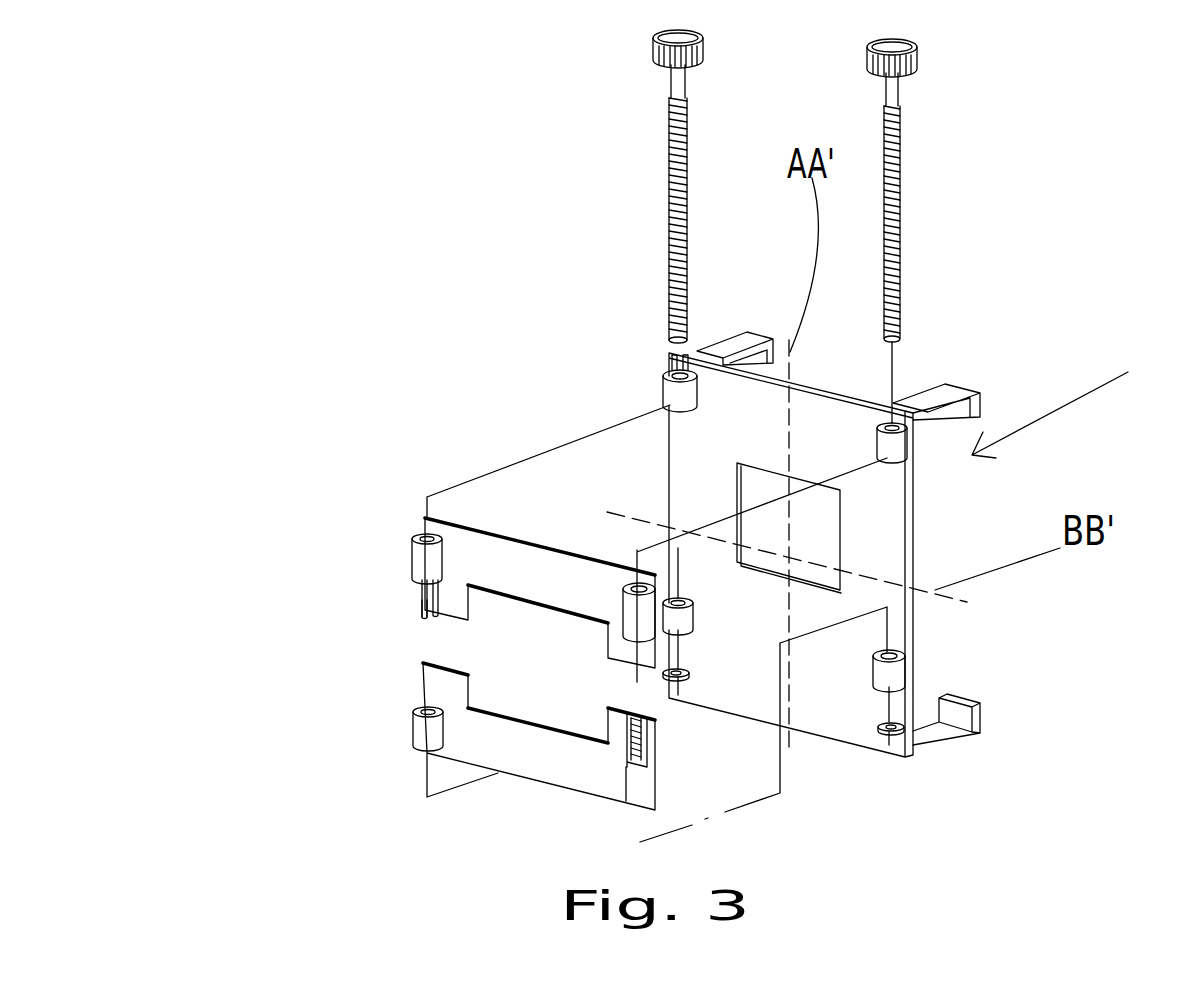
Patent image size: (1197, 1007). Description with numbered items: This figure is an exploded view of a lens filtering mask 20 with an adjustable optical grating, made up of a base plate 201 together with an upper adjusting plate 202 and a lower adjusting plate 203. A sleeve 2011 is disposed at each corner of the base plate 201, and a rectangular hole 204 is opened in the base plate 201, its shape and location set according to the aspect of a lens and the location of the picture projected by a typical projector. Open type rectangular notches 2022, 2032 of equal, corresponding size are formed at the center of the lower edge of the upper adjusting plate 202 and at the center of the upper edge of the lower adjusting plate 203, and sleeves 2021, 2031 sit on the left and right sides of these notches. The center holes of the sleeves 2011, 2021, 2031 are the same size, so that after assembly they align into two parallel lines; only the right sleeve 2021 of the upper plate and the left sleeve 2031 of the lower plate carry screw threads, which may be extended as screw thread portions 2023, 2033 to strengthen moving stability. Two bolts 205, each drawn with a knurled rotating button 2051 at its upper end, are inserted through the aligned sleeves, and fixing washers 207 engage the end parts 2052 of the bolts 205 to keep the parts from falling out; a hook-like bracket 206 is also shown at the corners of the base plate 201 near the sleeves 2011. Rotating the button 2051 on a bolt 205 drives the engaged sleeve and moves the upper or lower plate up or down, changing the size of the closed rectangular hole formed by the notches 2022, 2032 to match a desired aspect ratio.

The lens filtering mask 20 is at (1071, 402).
The base plate 201 is at (865, 508).
The sleeve 2011 is at (735, 345).
The upper adjusting plate 202 is at (498, 560).
The sleeve 2021 is at (430, 560).
The open type rectangular notch 2022 is at (533, 613).
The screw thread portion 2023 is at (418, 594).
The lower adjusting plate 203 is at (450, 682).
The sleeve 2031 is at (425, 727).
The open type rectangular notch 2032 is at (527, 713).
The screw thread portion 2033 is at (643, 613).
The rectangular hole 204 is at (818, 523).
The bolt 205 is at (668, 122).
The screw knob 2051 is at (653, 62).
The end part 2052 is at (673, 333).
The hook bracket 206 is at (927, 397).
The fixing washer 207 is at (677, 678).